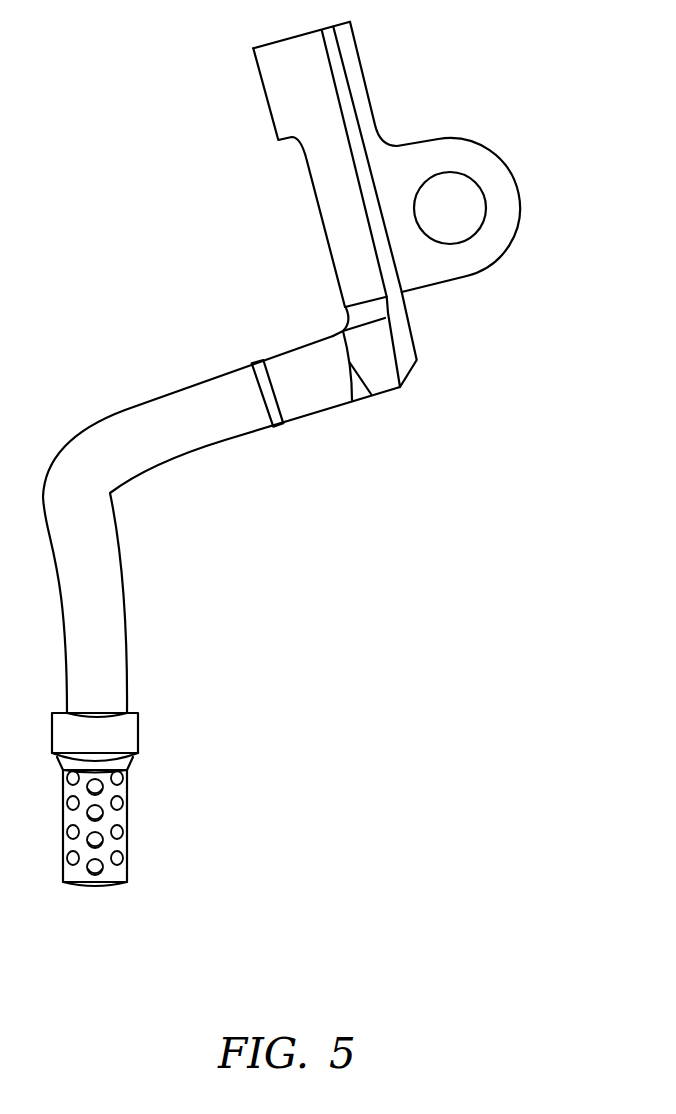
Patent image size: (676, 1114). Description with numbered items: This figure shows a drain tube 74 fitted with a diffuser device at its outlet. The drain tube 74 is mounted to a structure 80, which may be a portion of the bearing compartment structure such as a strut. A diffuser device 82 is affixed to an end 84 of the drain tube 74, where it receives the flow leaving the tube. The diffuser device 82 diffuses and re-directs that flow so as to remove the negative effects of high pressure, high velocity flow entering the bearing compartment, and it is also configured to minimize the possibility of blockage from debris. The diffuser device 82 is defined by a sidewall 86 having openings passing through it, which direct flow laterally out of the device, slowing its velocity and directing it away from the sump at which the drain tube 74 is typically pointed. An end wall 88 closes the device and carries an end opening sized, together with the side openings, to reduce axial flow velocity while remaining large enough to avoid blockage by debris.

The drain tube 74 is at (125, 410).
The structure 80 is at (399, 145).
The diffuser device 82 is at (157, 815).
The end of drain tube 84 is at (128, 713).
The sidewall 86 is at (128, 845).
The end wall 88 is at (100, 887).